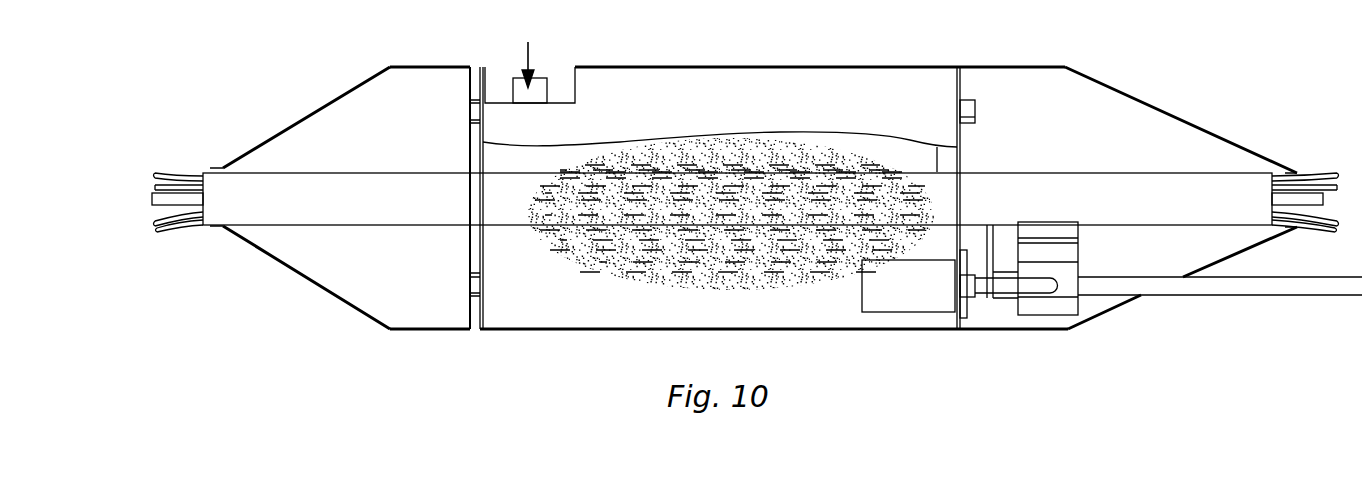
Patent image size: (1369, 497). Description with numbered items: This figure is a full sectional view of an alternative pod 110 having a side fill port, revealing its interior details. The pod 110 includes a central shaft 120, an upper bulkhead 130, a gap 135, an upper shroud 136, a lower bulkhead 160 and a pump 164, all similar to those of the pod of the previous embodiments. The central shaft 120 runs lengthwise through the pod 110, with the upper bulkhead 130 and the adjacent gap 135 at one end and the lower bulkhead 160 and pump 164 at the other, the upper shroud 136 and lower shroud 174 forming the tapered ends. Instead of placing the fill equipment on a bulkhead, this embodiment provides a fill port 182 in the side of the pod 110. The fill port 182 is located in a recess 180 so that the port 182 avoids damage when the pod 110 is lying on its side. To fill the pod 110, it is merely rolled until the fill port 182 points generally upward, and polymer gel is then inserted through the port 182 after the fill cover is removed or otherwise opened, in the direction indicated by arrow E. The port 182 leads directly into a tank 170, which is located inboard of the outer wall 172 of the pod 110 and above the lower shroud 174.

The pod 110 is at (1097, 59).
The central shaft 120 is at (938, 178).
The upper bulkhead 130 is at (487, 262).
The gap 135 is at (470, 262).
The upper shroud 136 is at (326, 290).
The lower bulkhead 160 is at (960, 137).
The pump 164 is at (973, 304).
The tank 170 is at (737, 115).
The outer wall 172 is at (632, 67).
The lower shroud 174 is at (1068, 330).
The recess 180 is at (567, 97).
The fill port 182 is at (513, 90).
The direction of insertion E is at (529, 48).